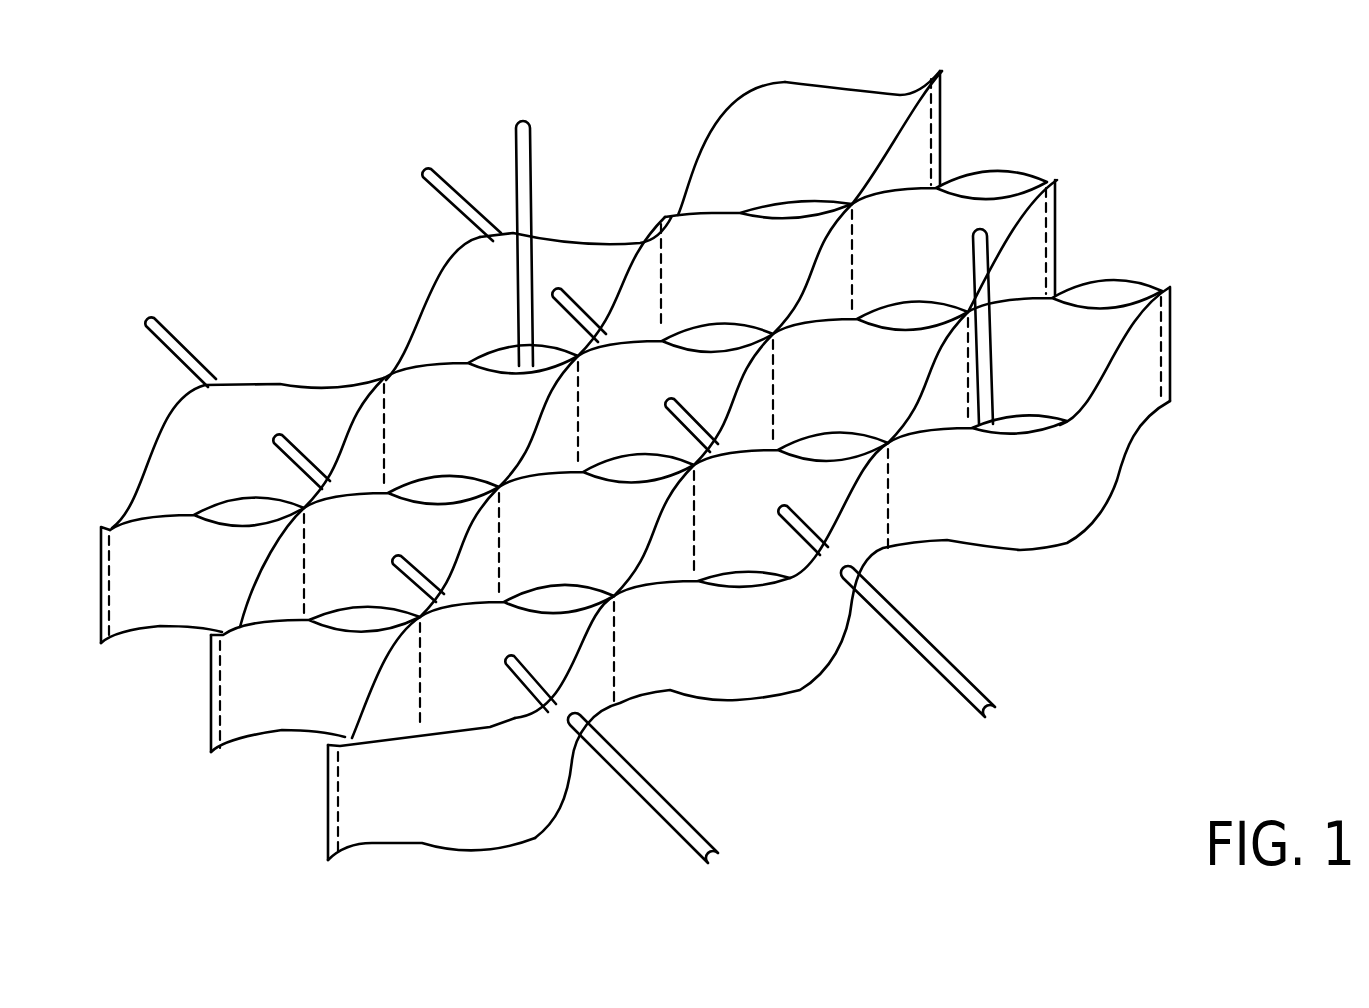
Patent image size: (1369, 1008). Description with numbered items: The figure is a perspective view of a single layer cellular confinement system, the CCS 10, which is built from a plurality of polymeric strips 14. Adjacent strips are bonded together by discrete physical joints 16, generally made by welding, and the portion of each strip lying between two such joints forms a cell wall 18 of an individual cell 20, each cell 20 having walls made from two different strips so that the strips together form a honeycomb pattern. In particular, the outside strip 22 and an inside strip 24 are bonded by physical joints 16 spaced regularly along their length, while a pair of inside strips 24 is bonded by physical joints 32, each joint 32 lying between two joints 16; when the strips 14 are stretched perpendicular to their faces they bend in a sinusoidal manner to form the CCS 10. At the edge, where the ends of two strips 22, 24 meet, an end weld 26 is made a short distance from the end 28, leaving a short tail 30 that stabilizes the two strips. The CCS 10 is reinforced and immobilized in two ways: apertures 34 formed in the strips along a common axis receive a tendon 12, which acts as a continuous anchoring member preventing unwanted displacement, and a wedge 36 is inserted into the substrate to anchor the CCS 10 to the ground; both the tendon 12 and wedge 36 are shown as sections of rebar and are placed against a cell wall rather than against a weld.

The CCS 10 is at (621, 108).
The tendon 12 is at (943, 673).
The polymeric strips 14 is at (1093, 497).
The physical joints 16 is at (887, 495).
The cell wall 18 is at (1045, 500).
The cell 20 is at (823, 115).
The outside strip 22 is at (1123, 345).
The inside strip 24 is at (987, 193).
The end weld 26 is at (328, 803).
The end 28 is at (328, 861).
The tail 30 is at (327, 774).
The physical joints 32 is at (693, 520).
The apertures 34 is at (287, 440).
The wedge 36 is at (513, 147).